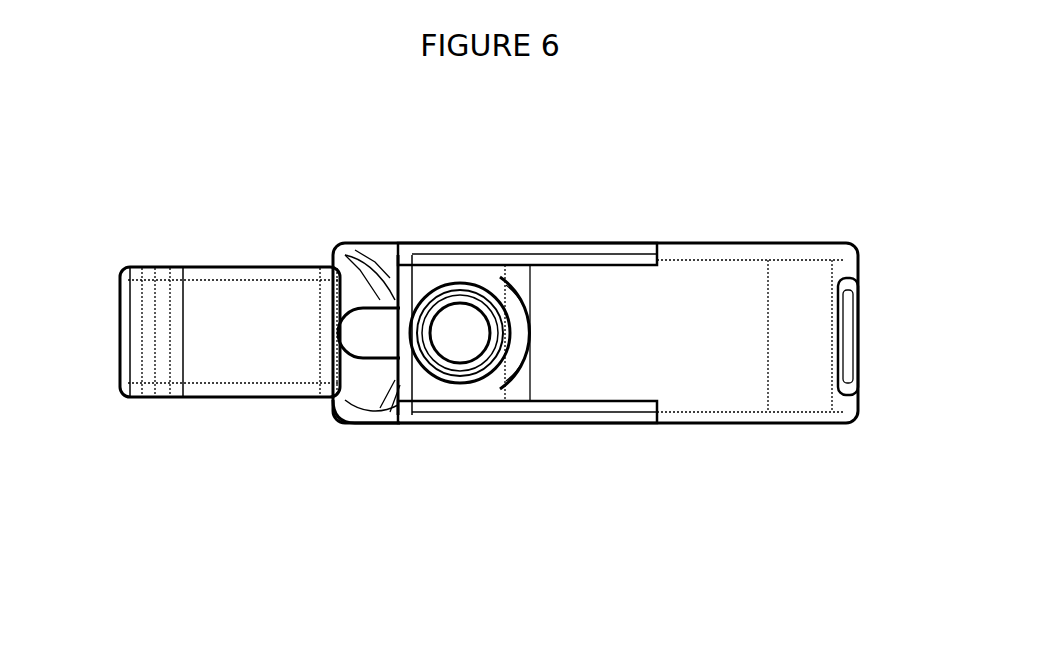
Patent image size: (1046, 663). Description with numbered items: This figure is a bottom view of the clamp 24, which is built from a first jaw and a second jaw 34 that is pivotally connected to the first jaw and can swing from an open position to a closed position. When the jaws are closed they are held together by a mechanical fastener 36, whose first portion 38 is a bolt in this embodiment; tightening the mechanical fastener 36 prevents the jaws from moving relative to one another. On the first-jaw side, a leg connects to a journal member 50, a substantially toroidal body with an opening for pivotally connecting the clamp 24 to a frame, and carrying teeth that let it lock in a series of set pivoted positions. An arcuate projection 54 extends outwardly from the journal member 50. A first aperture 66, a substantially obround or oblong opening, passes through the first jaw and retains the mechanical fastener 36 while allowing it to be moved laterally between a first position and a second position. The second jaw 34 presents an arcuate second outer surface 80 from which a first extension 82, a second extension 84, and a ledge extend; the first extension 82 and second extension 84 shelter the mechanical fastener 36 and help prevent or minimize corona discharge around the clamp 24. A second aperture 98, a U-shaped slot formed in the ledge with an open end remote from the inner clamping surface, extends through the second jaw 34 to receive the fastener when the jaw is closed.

The clamp 24 is at (843, 535).
The second jaw 34 is at (781, 243).
The mechanical fastener 36 is at (504, 420).
The first portion 38 is at (445, 290).
The journal member 50 is at (258, 355).
The arcuate projection 54 is at (140, 355).
The first aperture 66 is at (357, 324).
The second outer surface 80 is at (697, 375).
The first extension 82 is at (560, 243).
The second extension 84 is at (534, 503).
The second aperture 98 is at (383, 385).